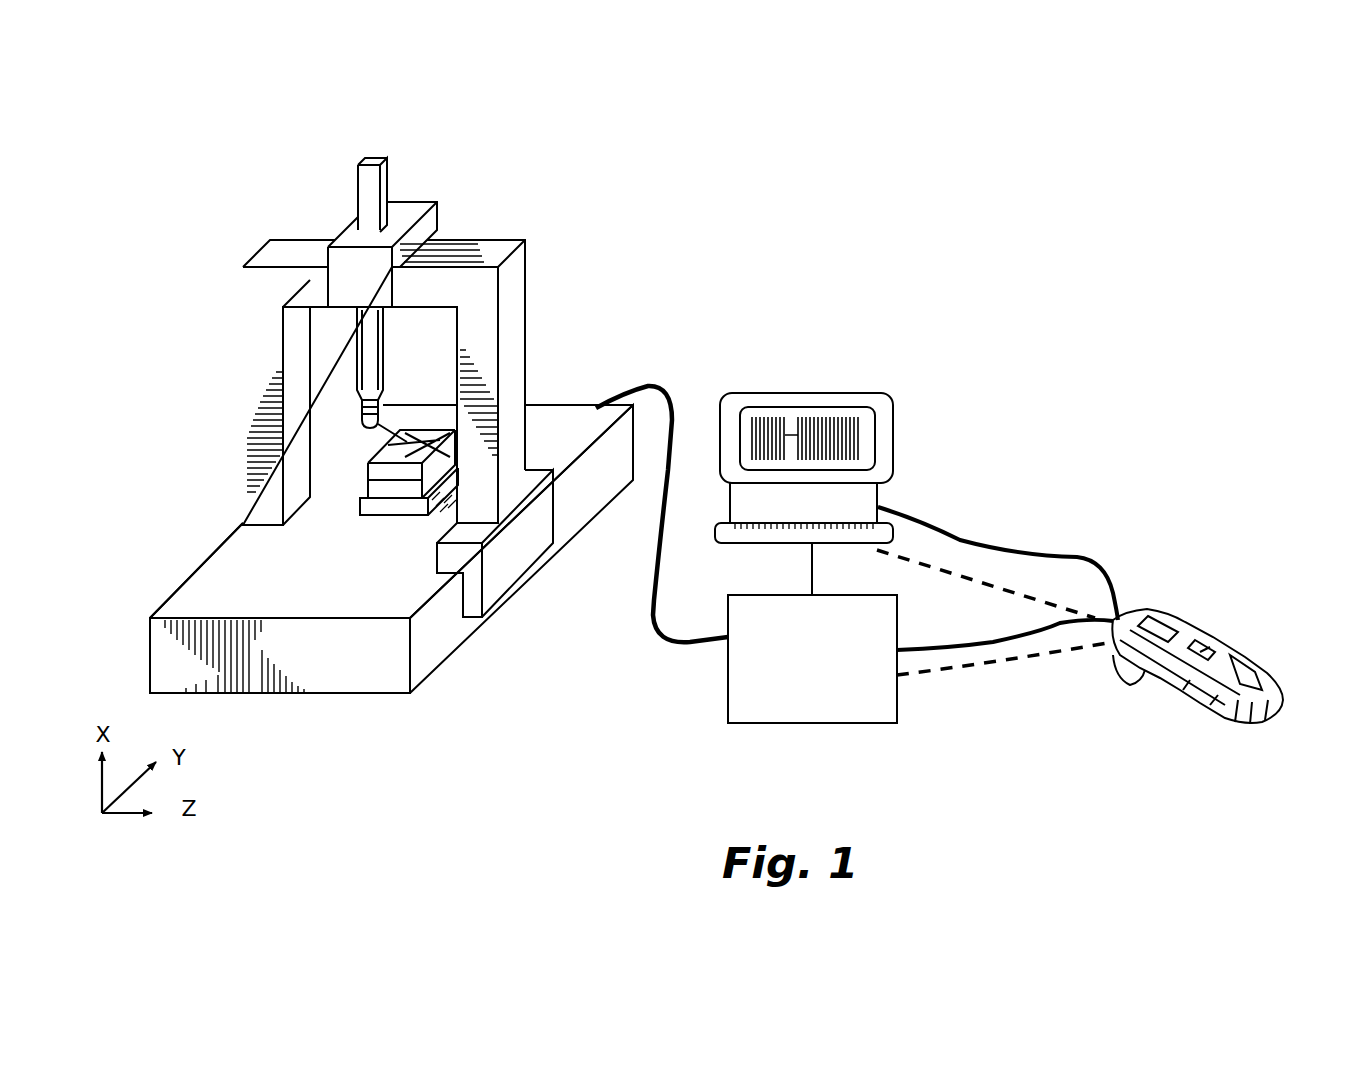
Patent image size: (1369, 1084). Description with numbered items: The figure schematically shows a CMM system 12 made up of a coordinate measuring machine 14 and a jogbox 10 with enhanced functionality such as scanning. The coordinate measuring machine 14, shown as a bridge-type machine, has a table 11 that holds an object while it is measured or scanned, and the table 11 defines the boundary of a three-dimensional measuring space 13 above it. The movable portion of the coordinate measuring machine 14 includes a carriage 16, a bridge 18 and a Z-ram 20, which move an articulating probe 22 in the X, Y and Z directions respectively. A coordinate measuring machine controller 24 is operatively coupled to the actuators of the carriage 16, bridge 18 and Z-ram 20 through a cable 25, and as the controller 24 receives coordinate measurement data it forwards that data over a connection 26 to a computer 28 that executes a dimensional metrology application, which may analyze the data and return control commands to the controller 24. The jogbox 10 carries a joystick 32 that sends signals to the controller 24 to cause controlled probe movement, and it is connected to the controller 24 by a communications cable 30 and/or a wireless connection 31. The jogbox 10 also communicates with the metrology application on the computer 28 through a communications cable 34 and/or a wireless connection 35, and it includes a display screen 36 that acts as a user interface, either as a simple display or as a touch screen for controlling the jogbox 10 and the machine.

The jogbox 10 is at (1237, 643).
The table 11 is at (353, 587).
The CMM system 12 is at (815, 205).
The 3D measuring space 13 is at (272, 551).
The coordinate measuring machine 14 is at (186, 330).
The carriage 16 is at (406, 212).
The bridge 18 is at (495, 251).
The Z-ram 20 is at (355, 338).
The articulating probe 22 is at (355, 433).
The coordinate measuring machine controller 24 is at (812, 659).
The cable 25 is at (648, 587).
The connection 26 is at (812, 568).
The computer 28 is at (887, 473).
The communications cable 30 is at (1023, 642).
The wireless connection 31 is at (983, 660).
The joystick 32 is at (1222, 638).
The communications cable 34 is at (1023, 548).
The wireless connection 35 is at (922, 567).
The display screen 36 is at (1168, 612).